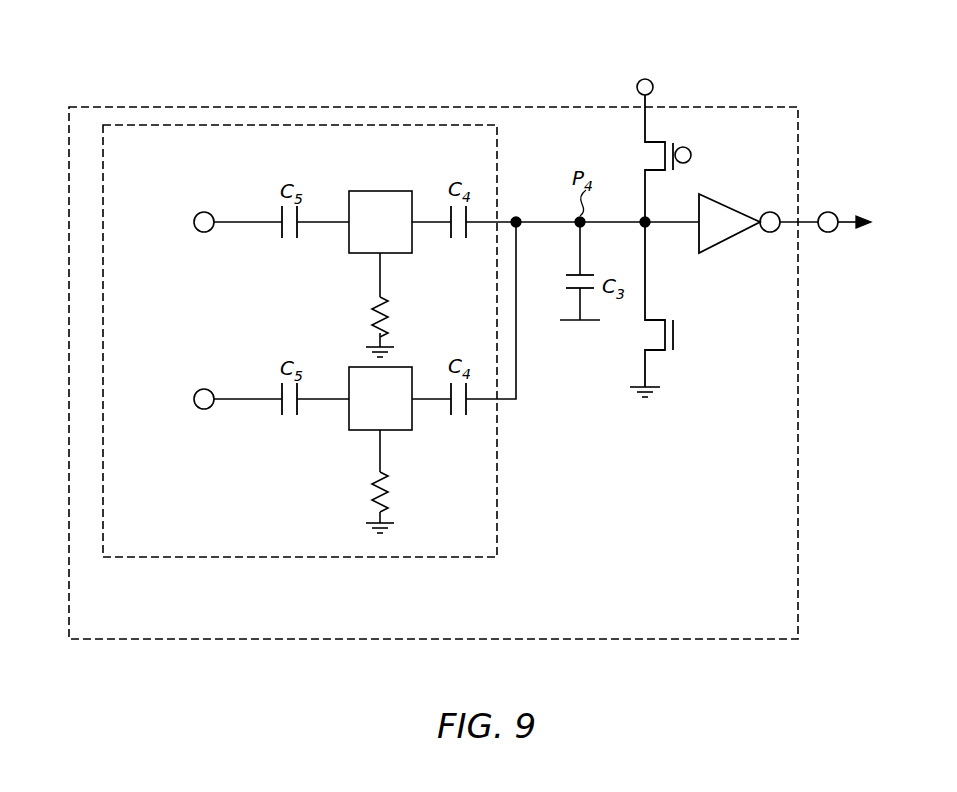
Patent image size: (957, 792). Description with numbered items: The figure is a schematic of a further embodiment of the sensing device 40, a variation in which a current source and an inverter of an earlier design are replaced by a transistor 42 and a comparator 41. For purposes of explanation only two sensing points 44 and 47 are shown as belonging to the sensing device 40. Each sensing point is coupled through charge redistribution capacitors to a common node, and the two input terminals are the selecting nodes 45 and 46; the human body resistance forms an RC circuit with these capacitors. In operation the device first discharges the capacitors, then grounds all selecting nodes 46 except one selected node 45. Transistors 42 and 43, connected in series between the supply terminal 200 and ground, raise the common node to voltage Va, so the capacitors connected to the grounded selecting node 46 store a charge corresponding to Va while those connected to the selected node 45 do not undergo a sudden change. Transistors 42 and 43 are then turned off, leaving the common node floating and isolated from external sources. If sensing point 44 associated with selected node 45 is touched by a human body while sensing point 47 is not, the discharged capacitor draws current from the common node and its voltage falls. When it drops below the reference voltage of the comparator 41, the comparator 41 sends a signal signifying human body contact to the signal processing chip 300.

The sensing device 40 is at (531, 640).
The comparator 41 is at (736, 237).
The transistor 42 is at (690, 149).
The transistor 43 is at (674, 335).
The sensing point 44 is at (379, 190).
The selecting node 45 is at (194, 222).
The selecting node 46 is at (194, 399).
The sensing point 47 is at (410, 432).
The supply voltage terminal 200 is at (645, 76).
The signal processing chip 300 is at (831, 232).